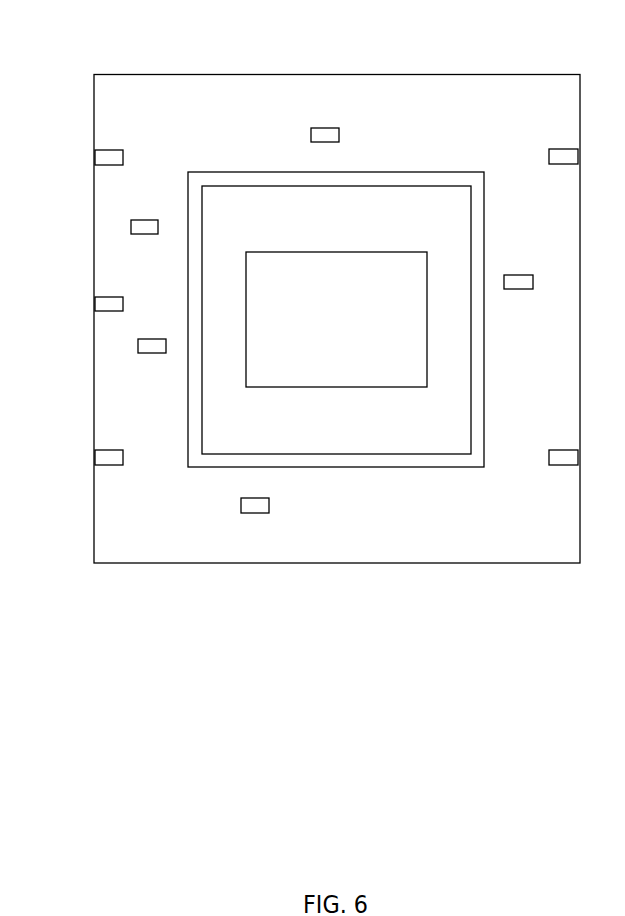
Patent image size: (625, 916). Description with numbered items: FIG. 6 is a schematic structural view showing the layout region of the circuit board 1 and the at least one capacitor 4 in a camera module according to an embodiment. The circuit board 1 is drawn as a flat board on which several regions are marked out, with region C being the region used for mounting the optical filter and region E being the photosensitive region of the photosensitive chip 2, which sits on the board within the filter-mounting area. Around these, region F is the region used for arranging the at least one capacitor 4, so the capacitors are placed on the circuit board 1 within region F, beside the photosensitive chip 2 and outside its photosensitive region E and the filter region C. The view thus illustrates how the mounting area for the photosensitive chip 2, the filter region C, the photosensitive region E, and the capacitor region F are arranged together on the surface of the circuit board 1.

The circuit board 1 is at (313, 75).
The region F is at (118, 122).
The capacitor 4 is at (145, 227).
The photosensitive chip 2 is at (202, 296).
The region C is at (233, 463).
The region E is at (255, 370).